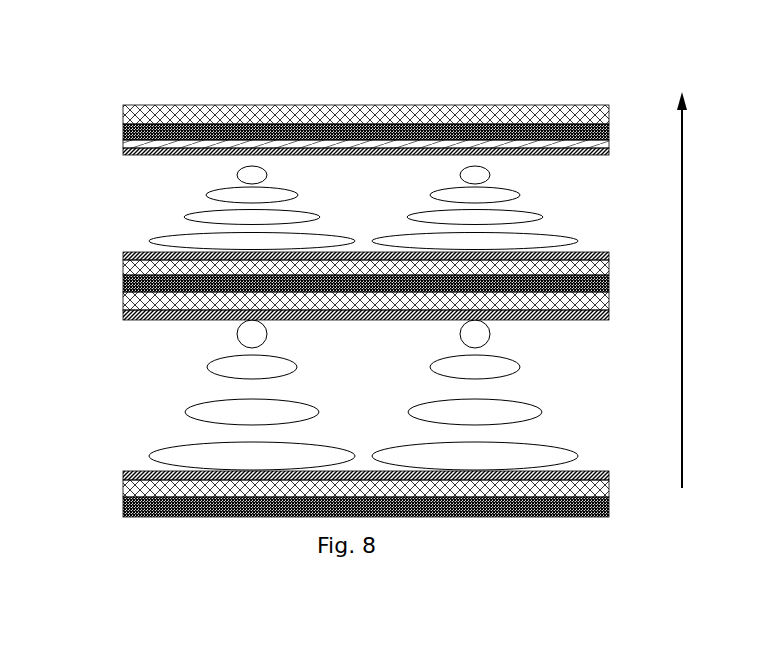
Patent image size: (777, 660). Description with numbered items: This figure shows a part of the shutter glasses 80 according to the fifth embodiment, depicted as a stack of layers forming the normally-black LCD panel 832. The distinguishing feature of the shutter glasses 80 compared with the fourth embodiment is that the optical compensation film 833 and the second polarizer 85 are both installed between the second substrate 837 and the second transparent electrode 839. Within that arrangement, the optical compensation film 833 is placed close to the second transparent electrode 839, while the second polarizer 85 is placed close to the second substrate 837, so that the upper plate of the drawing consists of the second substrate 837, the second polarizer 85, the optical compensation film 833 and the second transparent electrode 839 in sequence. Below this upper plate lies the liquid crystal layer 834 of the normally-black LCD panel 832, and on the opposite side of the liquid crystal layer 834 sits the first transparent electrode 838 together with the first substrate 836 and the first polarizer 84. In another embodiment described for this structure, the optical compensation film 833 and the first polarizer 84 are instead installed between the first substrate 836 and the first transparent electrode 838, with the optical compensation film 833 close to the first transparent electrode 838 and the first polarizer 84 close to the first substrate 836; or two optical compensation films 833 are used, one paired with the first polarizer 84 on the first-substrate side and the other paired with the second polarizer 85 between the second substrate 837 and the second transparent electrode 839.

The shutter glasses 80 is at (381, 40).
The second polarizer 85 is at (135, 132).
The second substrate 837 is at (600, 113).
The optical compensation film 833 is at (602, 145).
The second transparent electrode 839 is at (565, 152).
The normally-black LCD panel 832 is at (131, 217).
The liquid crystal layer 834 is at (531, 193).
The first transparent electrode 838 is at (128, 256).
The first substrate 836 is at (603, 268).
The first polarizer 84 is at (125, 283).